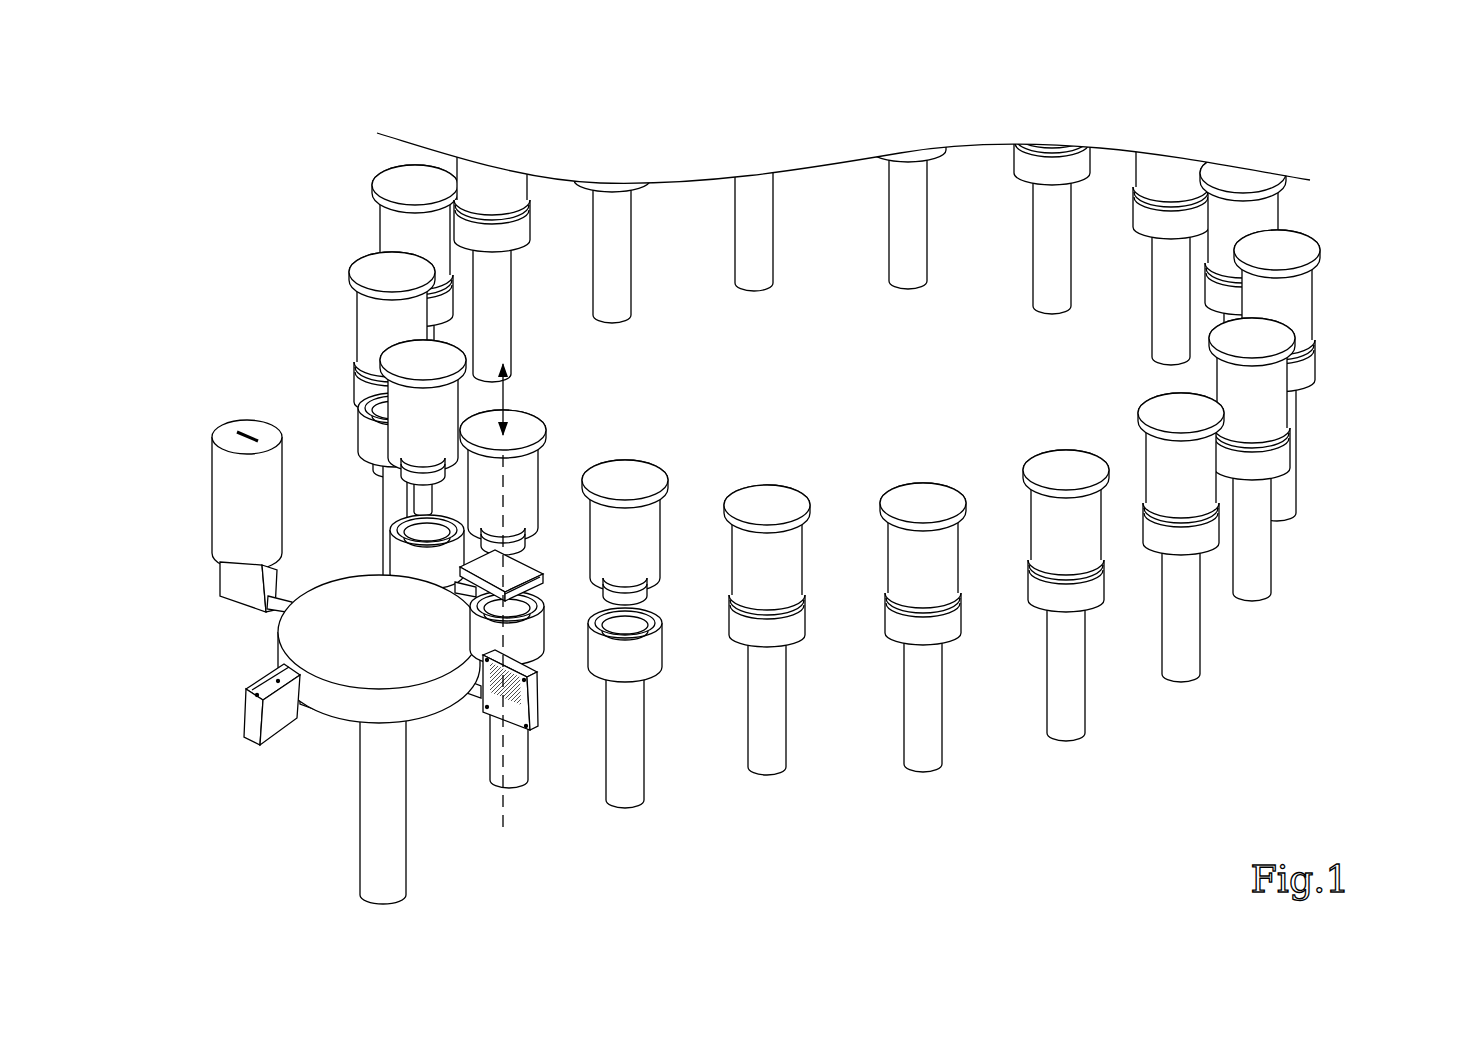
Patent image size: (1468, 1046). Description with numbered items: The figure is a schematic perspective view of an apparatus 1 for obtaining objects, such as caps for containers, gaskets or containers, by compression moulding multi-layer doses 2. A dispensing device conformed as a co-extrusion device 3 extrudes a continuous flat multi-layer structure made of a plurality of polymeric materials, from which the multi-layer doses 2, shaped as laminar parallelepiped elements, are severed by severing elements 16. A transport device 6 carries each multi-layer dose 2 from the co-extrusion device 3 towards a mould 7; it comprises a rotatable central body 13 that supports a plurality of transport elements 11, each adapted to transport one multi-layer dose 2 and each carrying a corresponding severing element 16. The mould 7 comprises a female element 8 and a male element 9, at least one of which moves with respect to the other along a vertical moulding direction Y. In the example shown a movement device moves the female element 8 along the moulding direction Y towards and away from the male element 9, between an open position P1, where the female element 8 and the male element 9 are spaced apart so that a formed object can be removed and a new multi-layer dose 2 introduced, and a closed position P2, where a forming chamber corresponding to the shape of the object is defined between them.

The apparatus 1 is at (1357, 162).
The multi-layer dose 2 is at (618, 627).
The co-extrusion device 3 is at (233, 497).
The transport device 6 is at (314, 775).
The mould 7 is at (842, 454).
The female element 8 is at (407, 562).
The male element 9 is at (415, 408).
The transport element 11 is at (247, 579).
The central body 13 is at (418, 698).
The severing element 16 is at (273, 677).
The open position P1 is at (558, 450).
The closed position P2 is at (1334, 271).
The moulding direction Y is at (504, 397).